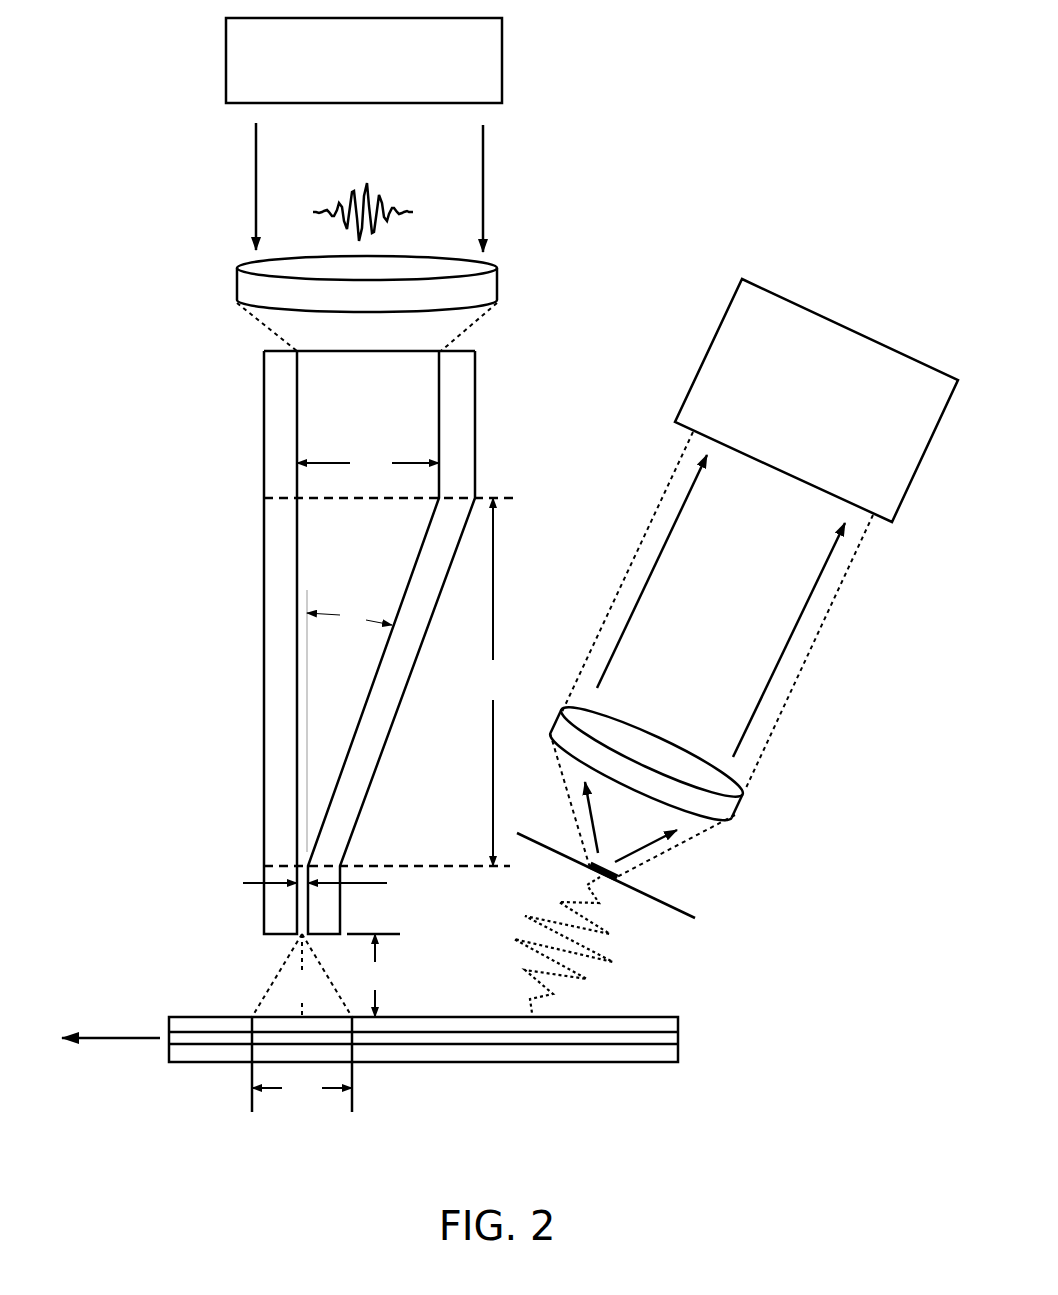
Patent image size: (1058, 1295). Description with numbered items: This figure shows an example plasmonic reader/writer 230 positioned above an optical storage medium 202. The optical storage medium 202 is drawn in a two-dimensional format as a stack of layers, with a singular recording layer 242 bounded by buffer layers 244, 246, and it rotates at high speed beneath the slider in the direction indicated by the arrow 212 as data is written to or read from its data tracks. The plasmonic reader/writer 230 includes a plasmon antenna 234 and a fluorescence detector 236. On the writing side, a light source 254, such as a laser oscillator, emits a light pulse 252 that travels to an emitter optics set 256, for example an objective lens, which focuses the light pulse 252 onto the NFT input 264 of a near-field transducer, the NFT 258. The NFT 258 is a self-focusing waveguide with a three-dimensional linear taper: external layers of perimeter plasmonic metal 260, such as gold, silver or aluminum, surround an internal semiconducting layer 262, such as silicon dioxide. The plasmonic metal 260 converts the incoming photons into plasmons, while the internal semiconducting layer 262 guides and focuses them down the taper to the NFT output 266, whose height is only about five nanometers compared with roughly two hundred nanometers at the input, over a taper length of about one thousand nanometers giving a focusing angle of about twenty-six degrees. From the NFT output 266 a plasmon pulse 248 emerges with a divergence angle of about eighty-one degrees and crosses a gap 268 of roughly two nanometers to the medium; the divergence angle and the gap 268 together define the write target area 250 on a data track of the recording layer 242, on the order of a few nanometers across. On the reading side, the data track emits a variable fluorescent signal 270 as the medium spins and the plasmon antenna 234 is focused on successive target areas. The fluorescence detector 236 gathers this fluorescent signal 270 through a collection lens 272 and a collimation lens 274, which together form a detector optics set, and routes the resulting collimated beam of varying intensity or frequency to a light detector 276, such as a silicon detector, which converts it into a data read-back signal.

The plasmonic reader/writer 230 is at (808, 93).
The plasmon antenna 234 is at (130, 89).
The fluorescence detector 236 is at (644, 427).
The optical storage medium 202 is at (146, 1002).
The arrow 212 is at (112, 1038).
The recording layer 242 is at (678, 1038).
The buffer layer 244 is at (678, 1022).
The buffer layer 246 is at (678, 1052).
The plasmon pulse 248 is at (280, 997).
The write target area 250 is at (302, 1064).
The light pulse 252 is at (369, 181).
The light source 254 is at (364, 60).
The emitter optics set 256 is at (498, 282).
The near-field transducer (NFT) 258 is at (238, 563).
The perimeter plasmonic metal 260 is at (417, 607).
The internal semiconducting layer 262 is at (368, 442).
The NFT input 264 is at (333, 345).
The NFT output 266 is at (296, 937).
The gap 268 is at (373, 975).
The variable fluorescent signal 270 is at (623, 968).
The collection lens 272 is at (653, 862).
The collimation lens 274 is at (633, 722).
The light detector 276 is at (816, 400).